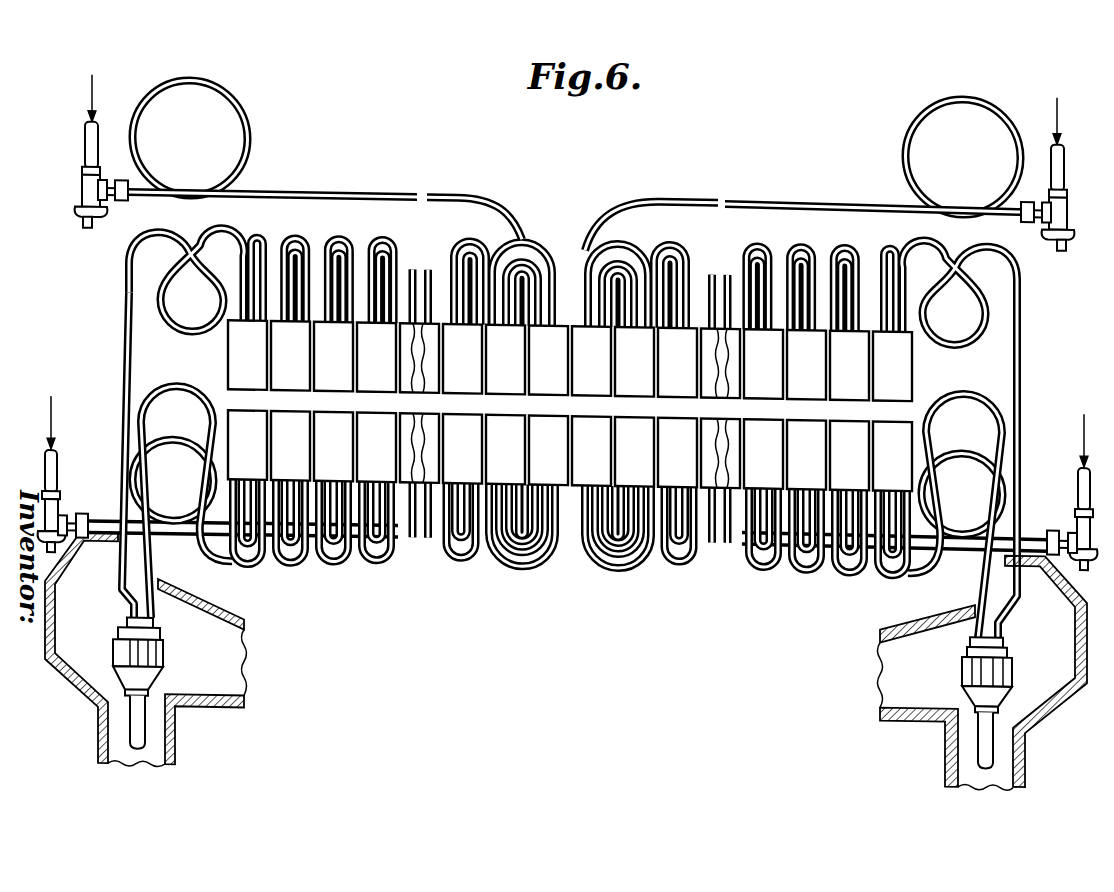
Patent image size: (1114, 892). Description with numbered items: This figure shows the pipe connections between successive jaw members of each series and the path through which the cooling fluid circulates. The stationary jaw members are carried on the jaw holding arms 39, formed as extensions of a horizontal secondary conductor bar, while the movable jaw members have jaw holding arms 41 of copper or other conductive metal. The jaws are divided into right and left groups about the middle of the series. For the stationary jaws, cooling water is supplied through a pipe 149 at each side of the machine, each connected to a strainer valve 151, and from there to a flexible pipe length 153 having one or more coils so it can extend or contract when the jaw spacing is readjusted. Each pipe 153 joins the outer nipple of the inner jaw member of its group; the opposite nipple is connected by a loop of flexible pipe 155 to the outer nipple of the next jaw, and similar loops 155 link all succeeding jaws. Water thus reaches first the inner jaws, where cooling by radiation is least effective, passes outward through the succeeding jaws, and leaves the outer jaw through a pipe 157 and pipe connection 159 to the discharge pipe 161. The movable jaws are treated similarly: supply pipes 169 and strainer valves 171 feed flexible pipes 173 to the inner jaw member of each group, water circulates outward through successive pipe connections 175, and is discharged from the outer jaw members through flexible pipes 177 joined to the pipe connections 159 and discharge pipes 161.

The jaw holding arm 39 is at (279, 369).
The jaw holding arm 41 is at (240, 432).
The supply pipe 149 is at (86, 161).
The strainer valve 151 is at (83, 204).
The flexible pipe length 153 is at (306, 197).
The loop of flexible pipe 155 is at (549, 240).
The pipe 157 is at (122, 310).
The pipe connection 159 is at (164, 669).
The discharge pipe 161 is at (140, 745).
The supply pipe 169 is at (56, 475).
The strainer valve 171 is at (59, 511).
The flexible pipe 173 is at (217, 546).
The pipe connection 175 is at (526, 570).
The flexible pipe 177 is at (138, 431).